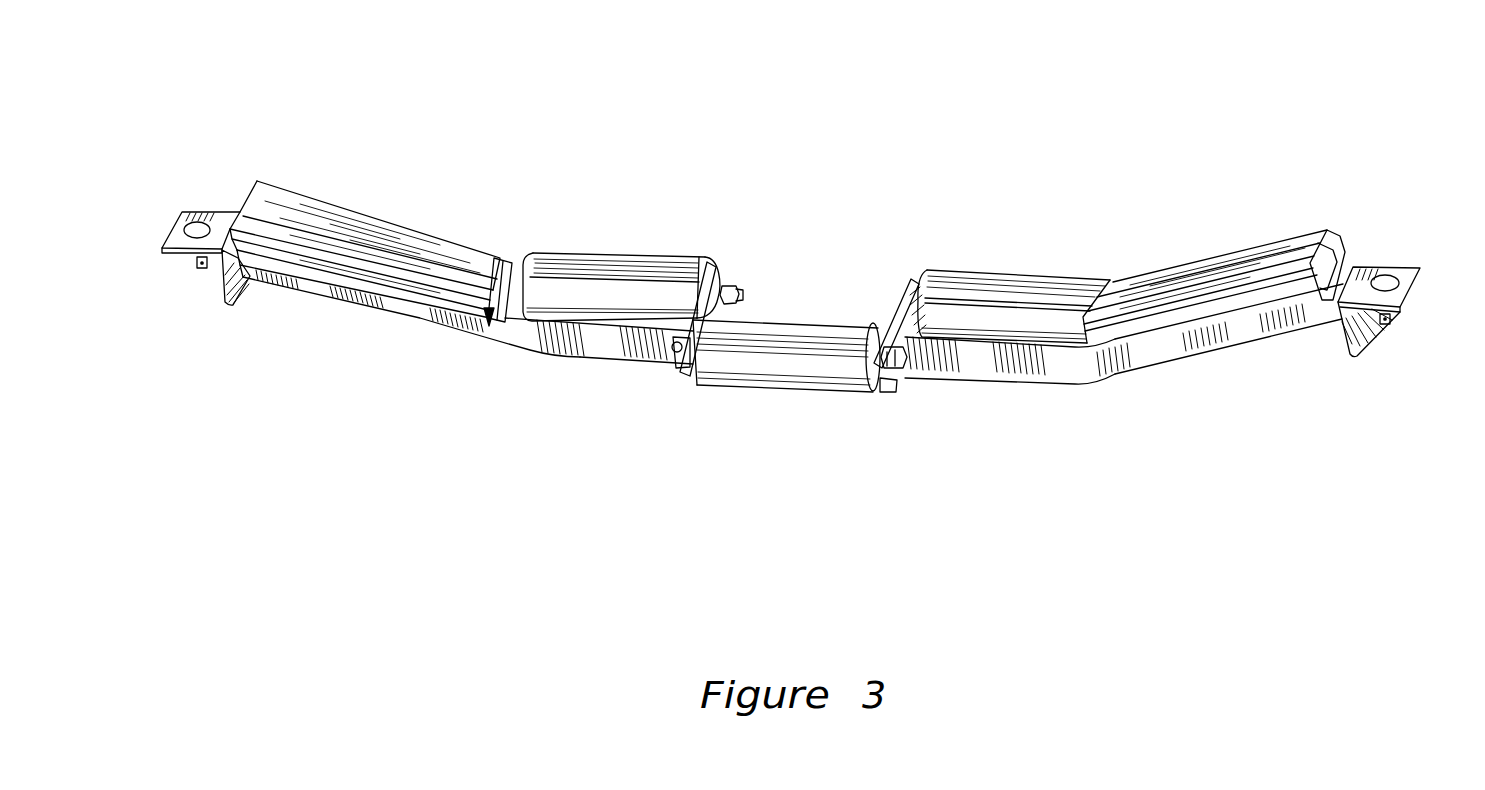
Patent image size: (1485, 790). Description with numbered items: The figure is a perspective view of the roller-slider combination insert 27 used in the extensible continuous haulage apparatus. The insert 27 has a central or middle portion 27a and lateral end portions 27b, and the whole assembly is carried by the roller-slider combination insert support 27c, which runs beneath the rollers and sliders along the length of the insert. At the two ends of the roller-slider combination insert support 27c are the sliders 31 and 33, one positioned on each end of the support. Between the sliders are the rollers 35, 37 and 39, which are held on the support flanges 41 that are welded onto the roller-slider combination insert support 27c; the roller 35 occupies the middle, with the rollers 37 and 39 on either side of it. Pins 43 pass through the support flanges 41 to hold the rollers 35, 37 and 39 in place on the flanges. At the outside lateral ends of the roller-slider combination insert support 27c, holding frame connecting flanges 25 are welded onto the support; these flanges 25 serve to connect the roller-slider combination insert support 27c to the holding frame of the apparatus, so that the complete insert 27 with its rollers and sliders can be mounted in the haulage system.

The holding frame connecting flange 25 is at (240, 210).
The roller-slider combination insert 27 is at (804, 275).
The central portion 27a is at (810, 460).
The end portion 27b is at (363, 347).
The roller-slider combination insert support 27c is at (613, 360).
The slider 31 is at (333, 202).
The slider 33 is at (1267, 240).
The roller 35 is at (823, 390).
The roller 37 is at (647, 253).
The roller 39 is at (1050, 273).
The support flange 41 is at (497, 252).
The pin 43 is at (903, 290).